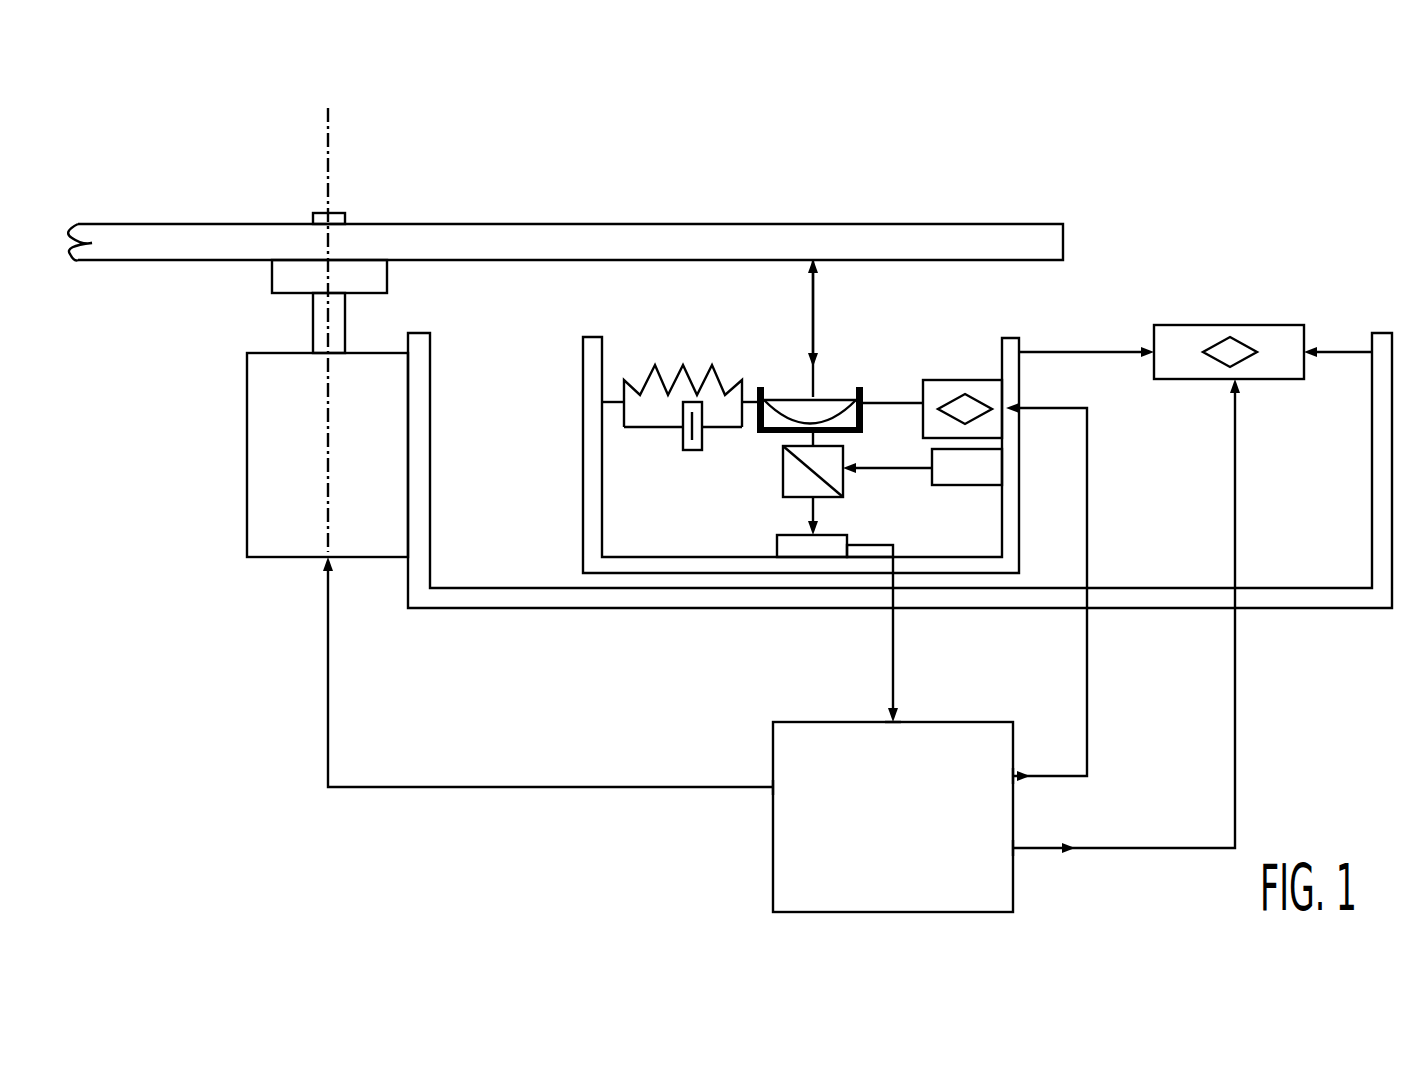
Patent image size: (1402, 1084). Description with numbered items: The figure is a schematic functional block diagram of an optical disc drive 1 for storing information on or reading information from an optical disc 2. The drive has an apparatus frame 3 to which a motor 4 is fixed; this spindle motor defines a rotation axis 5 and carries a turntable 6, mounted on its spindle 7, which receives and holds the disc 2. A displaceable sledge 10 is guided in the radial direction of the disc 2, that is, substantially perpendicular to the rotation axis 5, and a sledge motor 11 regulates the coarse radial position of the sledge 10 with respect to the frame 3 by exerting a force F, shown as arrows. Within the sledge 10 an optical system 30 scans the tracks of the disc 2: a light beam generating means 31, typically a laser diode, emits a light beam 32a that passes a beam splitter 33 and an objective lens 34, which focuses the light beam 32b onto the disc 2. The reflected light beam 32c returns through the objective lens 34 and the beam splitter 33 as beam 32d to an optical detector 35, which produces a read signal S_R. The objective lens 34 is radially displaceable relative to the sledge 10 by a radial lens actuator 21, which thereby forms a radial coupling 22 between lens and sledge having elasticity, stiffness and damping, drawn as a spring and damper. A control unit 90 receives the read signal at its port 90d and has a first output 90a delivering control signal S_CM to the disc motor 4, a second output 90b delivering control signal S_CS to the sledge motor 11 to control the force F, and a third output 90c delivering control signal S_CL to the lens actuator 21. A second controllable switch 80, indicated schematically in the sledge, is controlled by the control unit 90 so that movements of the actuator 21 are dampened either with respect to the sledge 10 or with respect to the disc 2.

The optical disc drive 1 is at (224, 770).
The optical disc 2 is at (456, 238).
The apparatus frame 3 is at (568, 598).
The motor 4 is at (247, 492).
The rotation axis 5 is at (328, 131).
The turntable 6 is at (272, 277).
The spindle 7 is at (313, 323).
The sledge 10 is at (593, 337).
The sledge motor 11 is at (1282, 325).
The radial lens actuator 21 is at (982, 380).
The radial coupling 22 is at (641, 413).
The optical system 30 is at (998, 280).
The light beam generating means 31 is at (988, 468).
The light beam 32a is at (885, 468).
The light beam 32b is at (862, 297).
The reflected light beam 32c is at (862, 379).
The beam 32d is at (815, 512).
The beam splitter 33 is at (783, 490).
The objective lens 34 is at (790, 405).
The optical detector 35 is at (817, 545).
The second controllable switch 80 is at (660, 527).
The control unit 90 is at (905, 845).
The first output 90a is at (823, 805).
The second output 90b is at (1000, 862).
The third output 90c is at (998, 790).
The control unit input S_R 90d is at (916, 760).